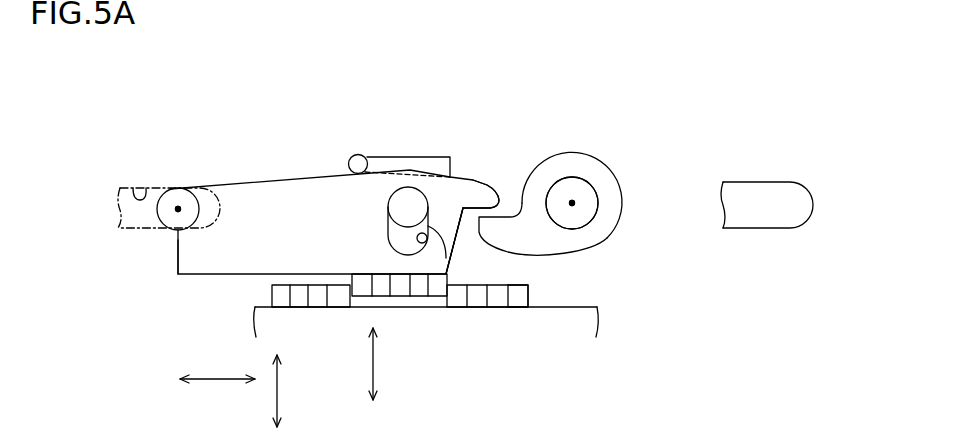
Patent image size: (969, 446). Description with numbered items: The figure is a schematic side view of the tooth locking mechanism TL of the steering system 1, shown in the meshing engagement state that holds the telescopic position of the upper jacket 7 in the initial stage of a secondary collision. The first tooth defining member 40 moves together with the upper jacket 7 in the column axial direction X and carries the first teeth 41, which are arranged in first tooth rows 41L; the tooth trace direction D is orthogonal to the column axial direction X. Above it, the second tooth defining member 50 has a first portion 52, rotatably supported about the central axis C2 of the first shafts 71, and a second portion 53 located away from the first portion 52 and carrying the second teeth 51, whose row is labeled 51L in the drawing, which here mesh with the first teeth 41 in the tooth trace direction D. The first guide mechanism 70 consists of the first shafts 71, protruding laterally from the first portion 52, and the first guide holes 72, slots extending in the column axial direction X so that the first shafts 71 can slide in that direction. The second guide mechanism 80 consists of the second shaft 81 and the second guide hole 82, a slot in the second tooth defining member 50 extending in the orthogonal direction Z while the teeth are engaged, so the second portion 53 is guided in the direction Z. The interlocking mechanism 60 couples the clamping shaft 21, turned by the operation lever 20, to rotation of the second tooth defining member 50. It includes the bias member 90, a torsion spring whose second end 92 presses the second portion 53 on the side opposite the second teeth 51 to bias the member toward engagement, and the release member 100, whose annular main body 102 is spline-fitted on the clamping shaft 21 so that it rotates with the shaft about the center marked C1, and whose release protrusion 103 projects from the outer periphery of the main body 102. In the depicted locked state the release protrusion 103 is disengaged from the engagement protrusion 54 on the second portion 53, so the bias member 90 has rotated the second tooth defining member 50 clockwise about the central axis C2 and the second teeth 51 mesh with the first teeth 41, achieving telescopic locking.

The steering system 1 is at (531, 107).
The tooth locking mechanism TL is at (558, 138).
The upper jacket 7 is at (572, 307).
The operation lever 20 is at (757, 190).
The clamping shaft 21 is at (598, 205).
The first tooth defining member 40 is at (271, 297).
The first teeth 41 is at (462, 308).
The first tooth rows 41L is at (528, 296).
The second tooth defining member 50 is at (285, 179).
The second teeth 51 is at (415, 297).
The second rack end 51L is at (342, 286).
The first portion 52 is at (190, 269).
The second portion 53 is at (442, 252).
The engagement protrusion 54 is at (482, 188).
The interlocking mechanism 60 is at (603, 160).
The first guide mechanism 70 is at (123, 126).
The first shafts 71 is at (193, 193).
The first guide holes 72 is at (138, 188).
The second guide mechanism 80 is at (495, 113).
The second shaft 81 is at (410, 200).
The second guide hole 82 is at (449, 255).
The bias member 90 is at (393, 157).
The second end 92 is at (355, 156).
The release member 100 is at (617, 177).
The annular main body 102 is at (609, 196).
The release protrusion 103 is at (494, 237).
The cam rotation center C1 is at (573, 205).
The central axis C2 is at (178, 210).
The column axial direction X is at (218, 381).
The orthogonal direction Z is at (279, 390).
The tooth trace direction D is at (375, 363).